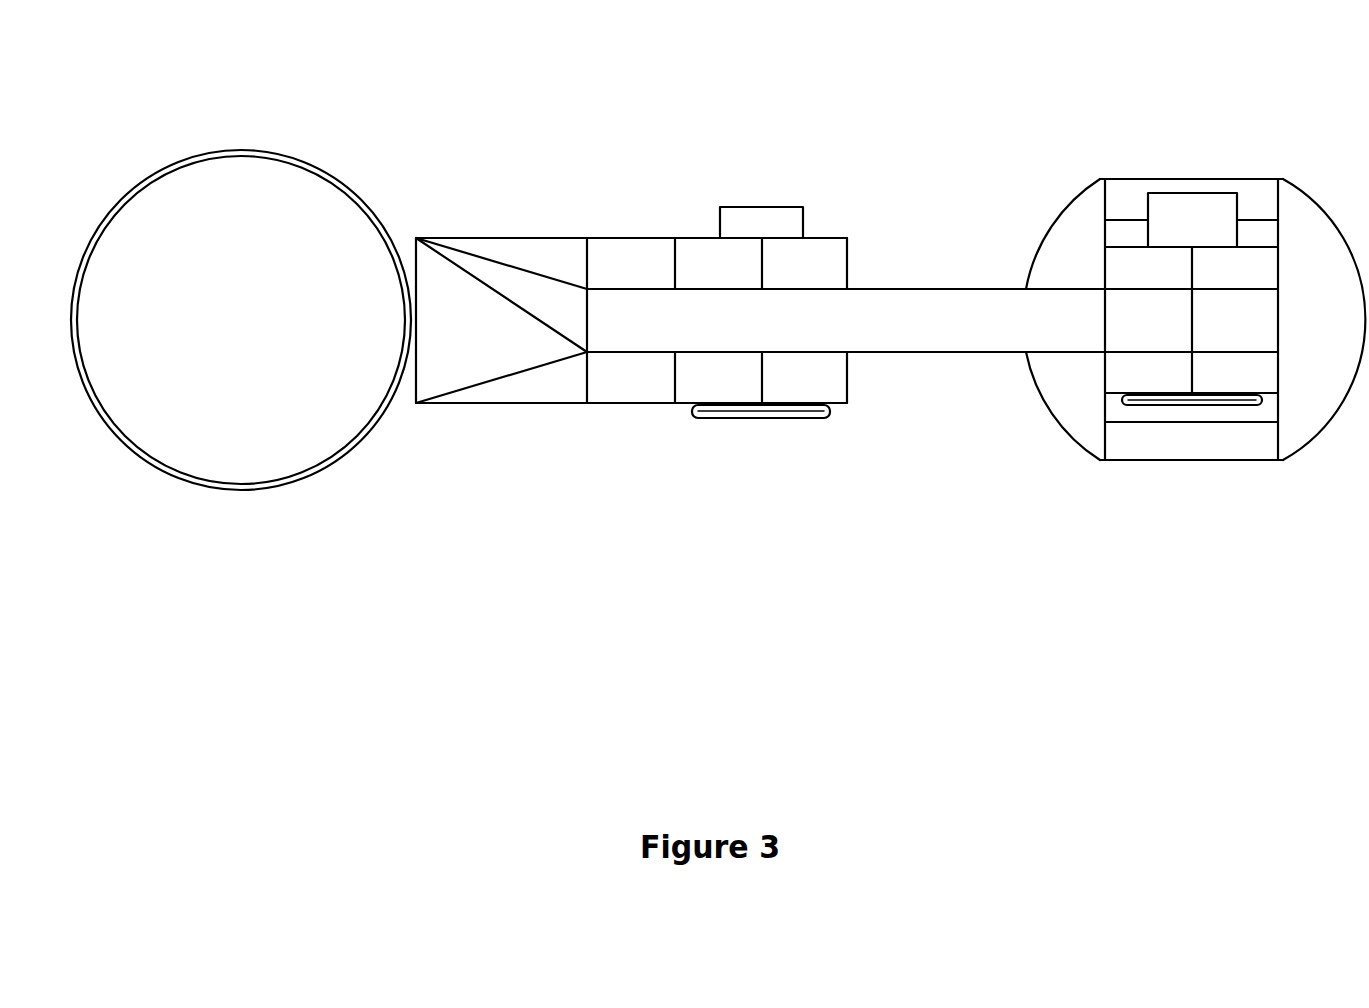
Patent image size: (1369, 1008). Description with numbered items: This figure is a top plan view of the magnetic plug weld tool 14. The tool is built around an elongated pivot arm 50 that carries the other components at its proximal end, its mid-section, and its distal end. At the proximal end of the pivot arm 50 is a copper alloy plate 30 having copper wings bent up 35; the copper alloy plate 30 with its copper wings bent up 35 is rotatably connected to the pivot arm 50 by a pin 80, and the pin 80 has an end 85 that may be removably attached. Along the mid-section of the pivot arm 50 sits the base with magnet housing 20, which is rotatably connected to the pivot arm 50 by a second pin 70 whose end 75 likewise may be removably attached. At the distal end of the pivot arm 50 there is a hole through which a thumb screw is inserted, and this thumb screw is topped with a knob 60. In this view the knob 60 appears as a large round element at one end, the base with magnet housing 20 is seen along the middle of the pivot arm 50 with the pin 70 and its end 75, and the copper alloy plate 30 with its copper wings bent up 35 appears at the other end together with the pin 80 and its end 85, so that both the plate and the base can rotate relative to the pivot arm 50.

The magnetic plug weld tool 14 is at (584, 193).
The base with magnet housing 20 is at (825, 385).
The copper alloy plate 30 is at (1062, 405).
The copper wings bent up 35 is at (1134, 263).
The pivot arm 50 is at (928, 339).
The knob 60 is at (237, 408).
The pin 70 is at (751, 420).
The end 75 is at (764, 203).
The pin 80 is at (1218, 410).
The end 85 is at (1188, 210).